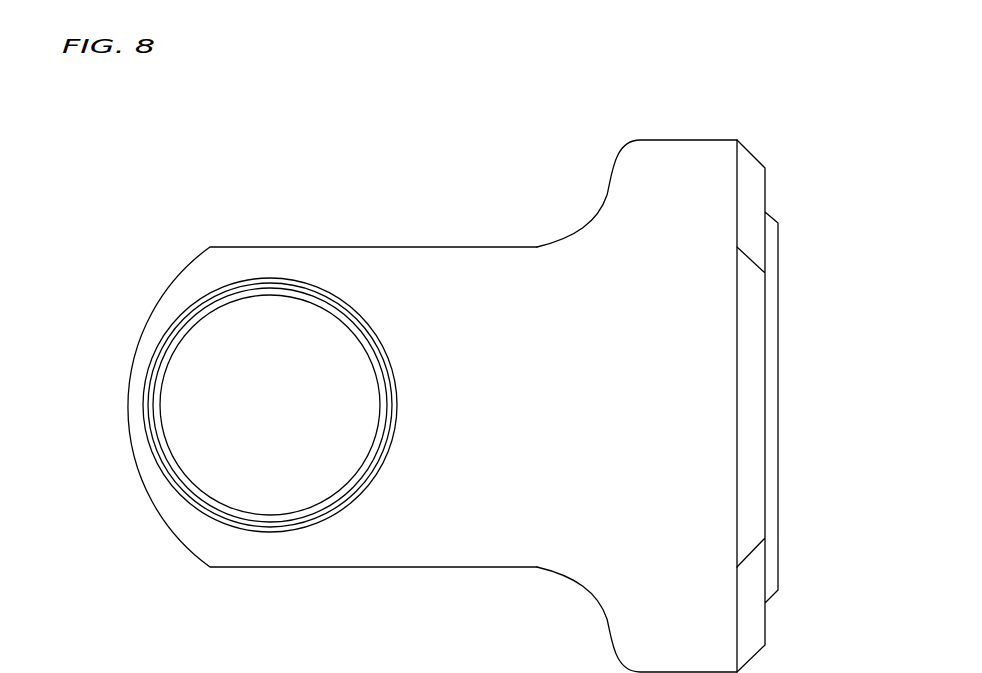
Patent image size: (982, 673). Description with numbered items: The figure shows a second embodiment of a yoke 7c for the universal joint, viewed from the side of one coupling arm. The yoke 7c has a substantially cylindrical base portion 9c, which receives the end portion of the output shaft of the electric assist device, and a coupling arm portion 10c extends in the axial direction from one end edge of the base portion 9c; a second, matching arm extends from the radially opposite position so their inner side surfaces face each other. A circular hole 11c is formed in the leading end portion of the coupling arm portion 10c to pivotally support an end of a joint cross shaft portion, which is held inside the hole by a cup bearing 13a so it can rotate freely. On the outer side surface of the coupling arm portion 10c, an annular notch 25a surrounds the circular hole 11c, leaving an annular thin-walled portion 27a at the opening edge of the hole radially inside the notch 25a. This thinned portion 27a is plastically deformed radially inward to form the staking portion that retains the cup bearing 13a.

The yoke 7c is at (668, 175).
The base portion 9c is at (710, 227).
The coupling arm portion 10c is at (482, 297).
The circular hole 11c is at (322, 306).
The cup bearing 13a is at (283, 483).
The annular notch 25a is at (397, 405).
The annular thin-walled portion 27a is at (386, 402).